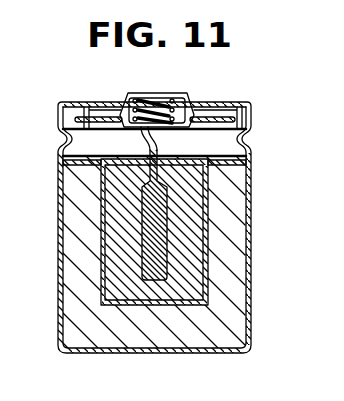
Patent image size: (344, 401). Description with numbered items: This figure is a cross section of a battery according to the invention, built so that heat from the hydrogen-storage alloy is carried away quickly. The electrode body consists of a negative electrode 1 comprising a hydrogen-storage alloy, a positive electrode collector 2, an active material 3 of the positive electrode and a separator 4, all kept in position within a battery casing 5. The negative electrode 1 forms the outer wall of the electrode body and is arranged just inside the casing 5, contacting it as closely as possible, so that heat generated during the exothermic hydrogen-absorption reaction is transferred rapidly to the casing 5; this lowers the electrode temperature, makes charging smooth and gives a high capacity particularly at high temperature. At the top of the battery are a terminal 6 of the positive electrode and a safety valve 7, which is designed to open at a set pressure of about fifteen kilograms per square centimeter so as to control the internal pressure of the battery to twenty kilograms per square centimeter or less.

The negative electrode 1 is at (233, 288).
The positive electrode collector 2 is at (150, 248).
The active material of the positive electrode 3 is at (193, 198).
The separator 4 is at (210, 239).
The battery casing 5 is at (250, 317).
The terminal of the positive electrode 6 is at (187, 98).
The safety valve 7 is at (160, 106).